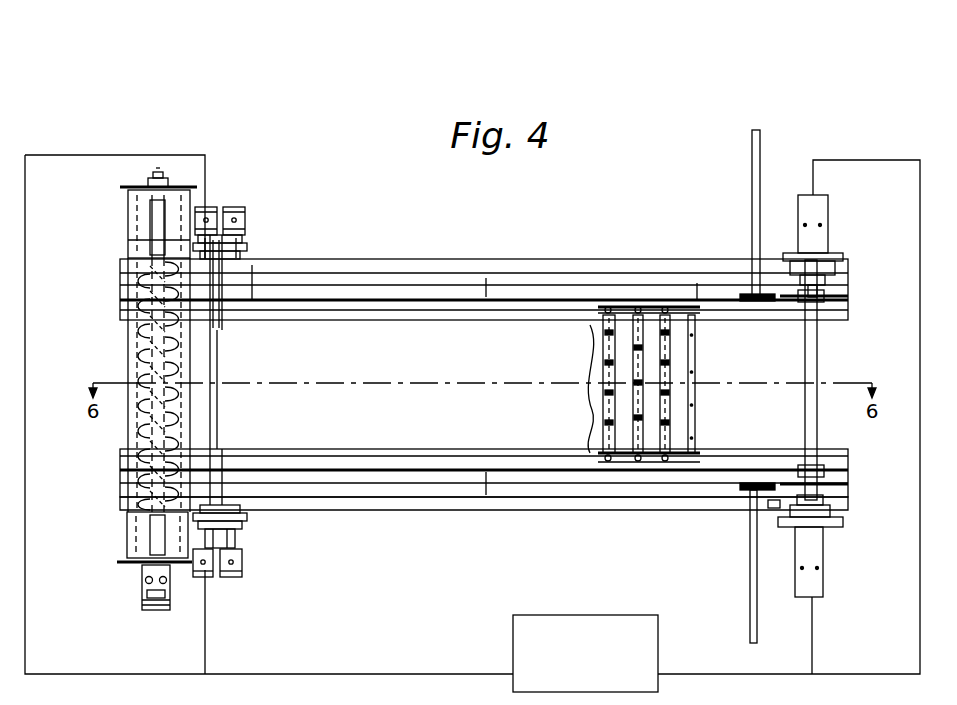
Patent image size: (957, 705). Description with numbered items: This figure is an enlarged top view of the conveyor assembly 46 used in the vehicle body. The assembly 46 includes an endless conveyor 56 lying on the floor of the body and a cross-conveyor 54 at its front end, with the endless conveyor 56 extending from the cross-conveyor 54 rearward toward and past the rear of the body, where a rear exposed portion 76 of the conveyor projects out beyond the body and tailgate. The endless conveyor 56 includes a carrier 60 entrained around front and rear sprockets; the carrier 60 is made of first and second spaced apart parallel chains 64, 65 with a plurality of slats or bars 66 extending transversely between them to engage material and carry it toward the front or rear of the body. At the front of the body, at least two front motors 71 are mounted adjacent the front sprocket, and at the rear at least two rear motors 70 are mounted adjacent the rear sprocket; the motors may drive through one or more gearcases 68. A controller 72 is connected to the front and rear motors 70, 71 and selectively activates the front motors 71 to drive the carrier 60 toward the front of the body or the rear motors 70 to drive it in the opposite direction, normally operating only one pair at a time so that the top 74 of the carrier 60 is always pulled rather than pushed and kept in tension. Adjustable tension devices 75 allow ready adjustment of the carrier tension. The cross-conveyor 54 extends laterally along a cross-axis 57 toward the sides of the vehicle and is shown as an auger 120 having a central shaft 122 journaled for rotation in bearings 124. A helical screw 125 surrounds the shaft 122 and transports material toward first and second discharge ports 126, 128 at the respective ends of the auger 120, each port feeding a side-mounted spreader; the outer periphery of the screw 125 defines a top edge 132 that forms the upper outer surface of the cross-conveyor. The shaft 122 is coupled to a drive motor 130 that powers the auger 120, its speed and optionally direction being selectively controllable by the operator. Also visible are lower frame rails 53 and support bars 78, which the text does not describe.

The conveyor assembly 46 is at (392, 240).
The lower rail 53 is at (470, 498).
The cross-conveyor 54 is at (124, 574).
The endless conveyor 56 is at (407, 520).
The cross-axis 57 is at (160, 176).
The carrier 60 is at (708, 420).
The first chain 64 is at (652, 475).
The second chain 65 is at (640, 305).
The bars 66 is at (603, 345).
The gearcase 68 is at (247, 246).
The rear motors 70 is at (820, 218).
The front motors 71 is at (207, 207).
The controller 72 is at (513, 648).
The top of the carrier 74 is at (594, 414).
The adjustable tension devices 75 is at (770, 293).
The rear exposed portion 76 is at (773, 510).
The support bar 78 is at (750, 605).
The auger 120 is at (128, 440).
The central shaft 122 is at (153, 218).
The bearings 124 is at (148, 181).
The helical screw 125 is at (138, 383).
The first discharge port 126 is at (127, 538).
The second discharge port 128 is at (128, 225).
The drive motor 130 is at (146, 590).
The top edge 132 is at (160, 425).